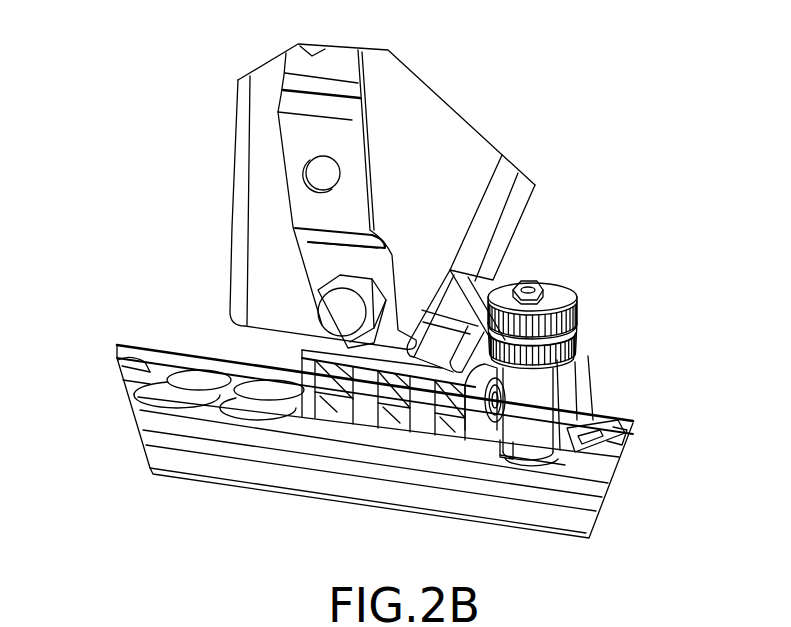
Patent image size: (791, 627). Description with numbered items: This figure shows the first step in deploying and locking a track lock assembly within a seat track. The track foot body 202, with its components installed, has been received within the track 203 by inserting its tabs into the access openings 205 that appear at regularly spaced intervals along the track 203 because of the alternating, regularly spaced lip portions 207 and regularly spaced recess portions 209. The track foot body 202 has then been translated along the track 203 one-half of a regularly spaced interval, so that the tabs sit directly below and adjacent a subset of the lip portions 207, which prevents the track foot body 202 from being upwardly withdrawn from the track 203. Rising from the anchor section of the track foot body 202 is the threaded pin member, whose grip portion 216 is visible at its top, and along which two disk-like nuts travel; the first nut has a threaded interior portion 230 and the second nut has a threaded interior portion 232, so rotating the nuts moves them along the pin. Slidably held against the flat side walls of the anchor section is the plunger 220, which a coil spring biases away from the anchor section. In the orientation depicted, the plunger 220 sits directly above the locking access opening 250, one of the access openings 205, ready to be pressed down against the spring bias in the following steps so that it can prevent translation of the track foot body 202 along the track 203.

The track foot body 202 is at (360, 415).
The track 203 is at (165, 458).
The access openings 205 is at (197, 383).
The regularly spaced lip portions 207 is at (148, 373).
The regularly spaced recess portions 209 is at (207, 383).
The grip portion 216 is at (538, 283).
The plunger 220 is at (580, 365).
The interior portion 230 is at (578, 305).
The interior portion 232 is at (587, 337).
The locking access opening 250 is at (533, 457).